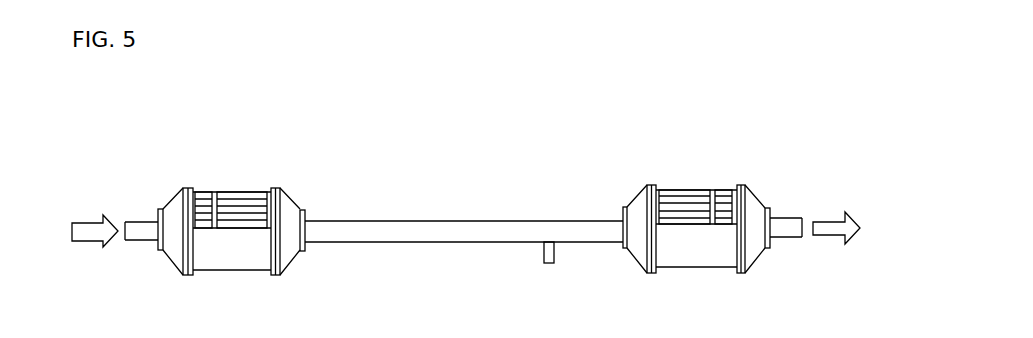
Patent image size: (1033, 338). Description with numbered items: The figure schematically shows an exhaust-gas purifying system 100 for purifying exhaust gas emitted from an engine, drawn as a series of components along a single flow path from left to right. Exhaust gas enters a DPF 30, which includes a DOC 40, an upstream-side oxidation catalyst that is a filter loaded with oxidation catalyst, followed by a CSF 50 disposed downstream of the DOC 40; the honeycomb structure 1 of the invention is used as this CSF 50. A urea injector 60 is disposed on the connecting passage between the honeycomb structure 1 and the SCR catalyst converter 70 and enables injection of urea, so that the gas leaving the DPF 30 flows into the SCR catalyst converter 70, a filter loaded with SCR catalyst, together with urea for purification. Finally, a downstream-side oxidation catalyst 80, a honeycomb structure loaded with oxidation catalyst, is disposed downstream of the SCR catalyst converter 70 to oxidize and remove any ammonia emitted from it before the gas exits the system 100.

The exhaust-gas purifying system 100 is at (632, 158).
The DPF 30 is at (273, 140).
The DOC 40 is at (207, 200).
The honeycomb structure 1 is at (243, 185).
The CSF 50 is at (247, 202).
The urea injector 60 is at (551, 250).
The SCR catalyst converter 70 is at (688, 207).
The downstream-side oxidation catalyst 80 is at (723, 205).